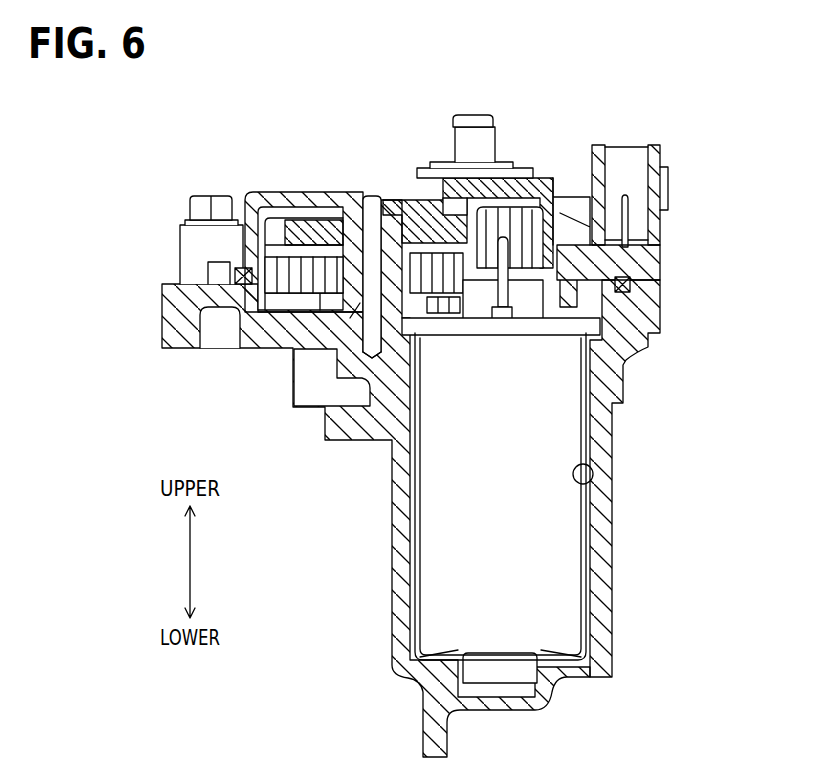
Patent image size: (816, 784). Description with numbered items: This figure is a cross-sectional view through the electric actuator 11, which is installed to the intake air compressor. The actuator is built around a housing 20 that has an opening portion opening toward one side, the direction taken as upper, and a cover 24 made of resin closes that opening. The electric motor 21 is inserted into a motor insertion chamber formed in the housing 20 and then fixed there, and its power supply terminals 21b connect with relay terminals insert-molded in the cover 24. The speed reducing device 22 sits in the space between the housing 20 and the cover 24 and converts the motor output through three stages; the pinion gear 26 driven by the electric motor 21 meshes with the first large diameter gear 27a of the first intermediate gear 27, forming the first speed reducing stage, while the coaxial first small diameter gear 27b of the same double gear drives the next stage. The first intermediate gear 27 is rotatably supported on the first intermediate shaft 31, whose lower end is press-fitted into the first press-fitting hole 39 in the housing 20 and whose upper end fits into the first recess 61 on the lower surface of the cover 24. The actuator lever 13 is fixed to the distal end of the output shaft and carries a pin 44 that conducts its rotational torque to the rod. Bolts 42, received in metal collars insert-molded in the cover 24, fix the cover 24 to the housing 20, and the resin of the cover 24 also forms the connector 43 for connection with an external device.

The electric actuator 11 is at (742, 142).
The actuator lever 13 is at (523, 172).
The housing 20 is at (177, 330).
The electric motor 21 is at (560, 428).
The power supply terminals 21b is at (640, 268).
The speed reducing device 22 is at (293, 213).
The cover 24 is at (305, 198).
The pinion gear 26 is at (522, 227).
The first intermediate gear 27 is at (451, 200).
The first large diameter gear 27a is at (467, 238).
The first small diameter gear 27b is at (402, 282).
The first intermediate shaft 31 is at (360, 303).
The first press-fitting hole 39 is at (363, 343).
The bolts 42 is at (204, 204).
The connector 43 is at (658, 155).
The pin 44 is at (472, 137).
The first recess 61 is at (365, 195).